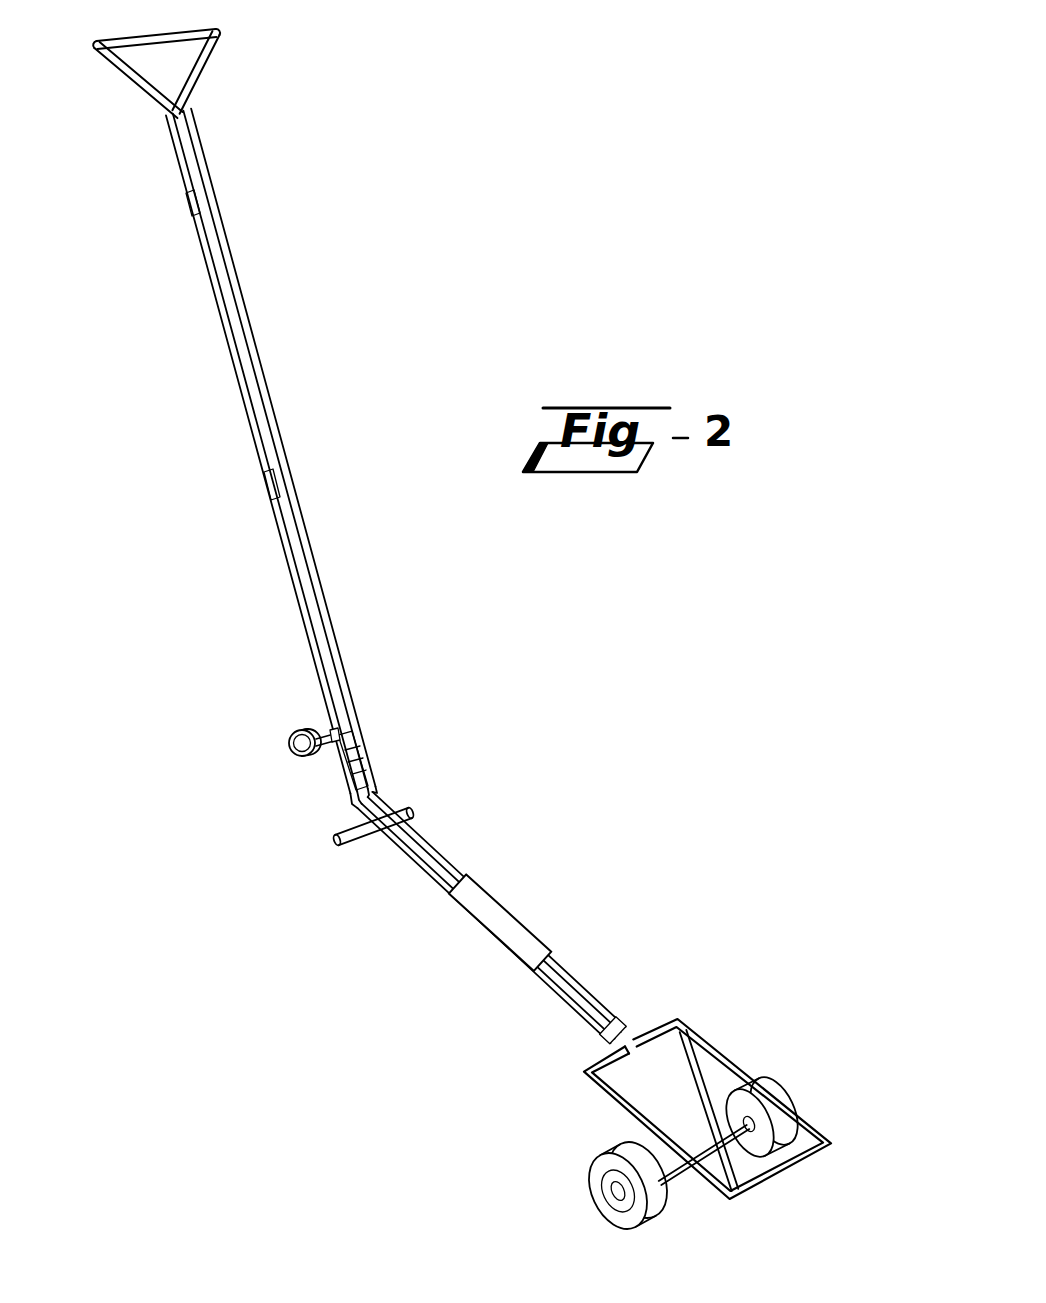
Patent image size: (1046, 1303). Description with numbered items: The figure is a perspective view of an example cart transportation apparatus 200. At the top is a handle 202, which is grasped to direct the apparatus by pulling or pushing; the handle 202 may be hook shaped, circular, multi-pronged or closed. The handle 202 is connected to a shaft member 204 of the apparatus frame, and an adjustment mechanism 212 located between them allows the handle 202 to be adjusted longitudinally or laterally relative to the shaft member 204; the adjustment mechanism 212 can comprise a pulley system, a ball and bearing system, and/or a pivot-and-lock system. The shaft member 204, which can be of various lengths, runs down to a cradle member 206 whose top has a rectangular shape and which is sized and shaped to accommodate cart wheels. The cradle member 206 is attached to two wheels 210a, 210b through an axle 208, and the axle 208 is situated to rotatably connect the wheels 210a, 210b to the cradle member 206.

The cart transportation apparatus 200 is at (549, 241).
The handle 202 is at (214, 300).
The shaft member 204 is at (463, 880).
The cradle member 206 is at (790, 1182).
The axle 208 is at (722, 1112).
The wheel 210a is at (607, 1213).
The wheel 210b is at (778, 1088).
The adjustment mechanism 212 is at (288, 740).